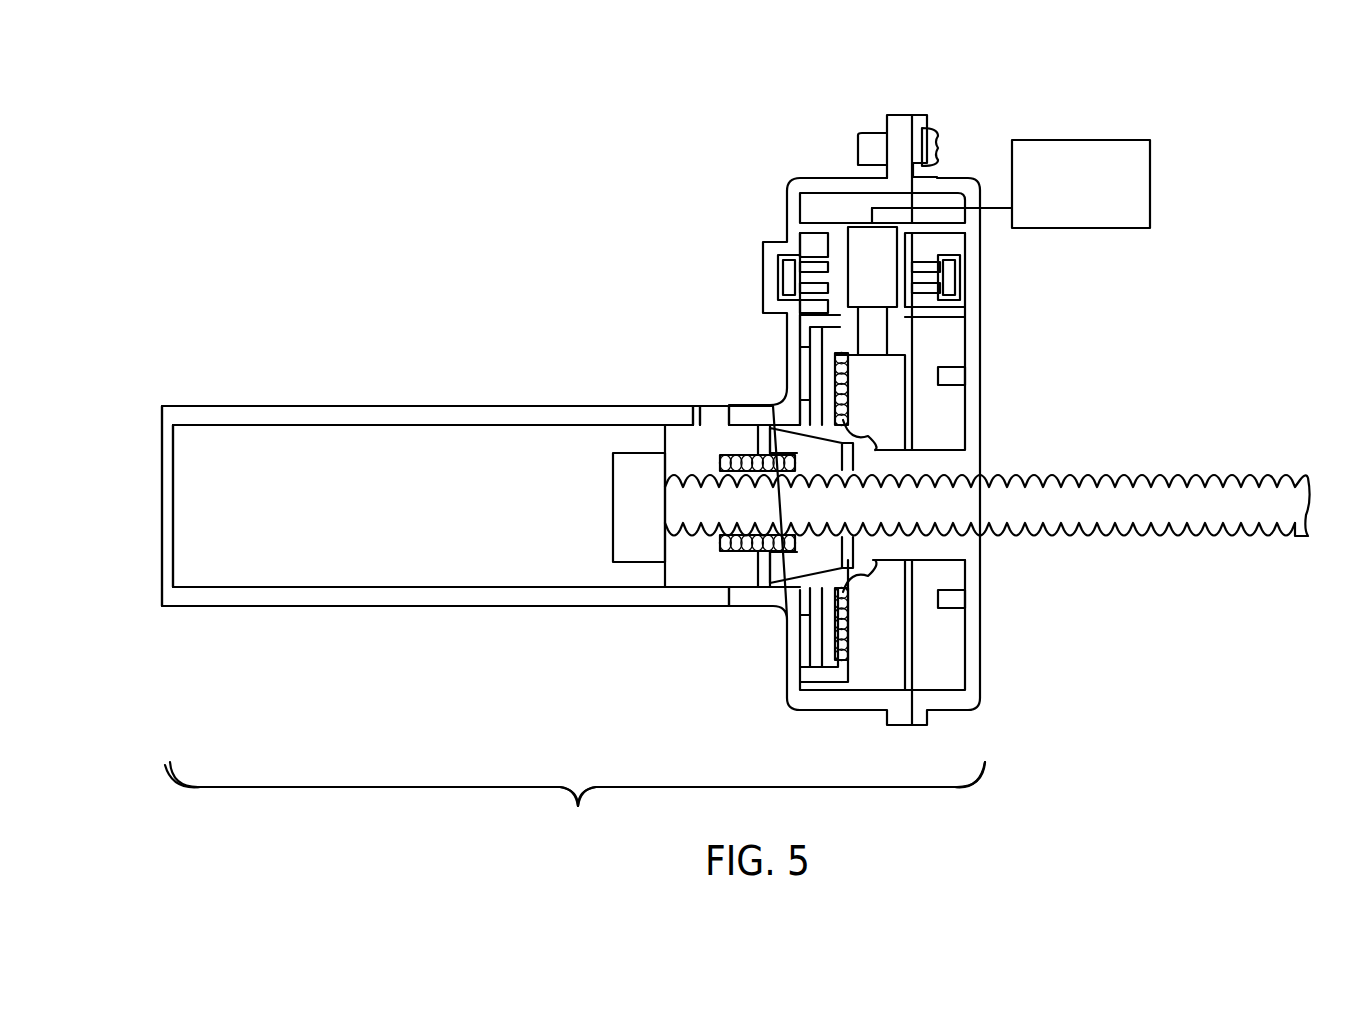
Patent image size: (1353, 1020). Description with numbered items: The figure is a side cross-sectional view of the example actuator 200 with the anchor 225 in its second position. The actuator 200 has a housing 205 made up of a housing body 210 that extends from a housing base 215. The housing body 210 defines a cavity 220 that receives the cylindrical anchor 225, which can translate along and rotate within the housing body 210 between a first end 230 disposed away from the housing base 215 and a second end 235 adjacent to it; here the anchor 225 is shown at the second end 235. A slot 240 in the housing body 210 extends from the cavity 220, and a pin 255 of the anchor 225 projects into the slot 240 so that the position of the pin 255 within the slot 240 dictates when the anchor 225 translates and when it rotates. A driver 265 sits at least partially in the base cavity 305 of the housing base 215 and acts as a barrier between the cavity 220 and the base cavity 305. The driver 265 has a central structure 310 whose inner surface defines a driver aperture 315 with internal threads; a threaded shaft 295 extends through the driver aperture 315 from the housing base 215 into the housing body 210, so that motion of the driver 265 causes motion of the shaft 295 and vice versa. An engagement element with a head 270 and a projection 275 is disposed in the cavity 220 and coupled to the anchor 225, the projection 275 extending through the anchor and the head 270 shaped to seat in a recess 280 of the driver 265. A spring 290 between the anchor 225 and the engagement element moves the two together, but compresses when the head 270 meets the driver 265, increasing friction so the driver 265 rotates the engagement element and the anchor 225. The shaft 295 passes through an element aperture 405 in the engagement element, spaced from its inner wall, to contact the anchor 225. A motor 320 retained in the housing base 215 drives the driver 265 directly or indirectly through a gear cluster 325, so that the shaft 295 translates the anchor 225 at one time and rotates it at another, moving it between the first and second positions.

The actuator 200 is at (340, 158).
The housing 205 is at (577, 805).
The housing body 210 is at (530, 410).
The housing base 215 is at (826, 182).
The cavity 220 is at (443, 430).
The anchor 225 is at (698, 575).
The first end 230 is at (160, 418).
The second end 235 is at (777, 400).
The slot 240 is at (695, 405).
The pin 255 is at (717, 405).
The driver 265 is at (937, 560).
The head 270 is at (812, 572).
The projection 275 is at (620, 432).
The recess 280 is at (850, 465).
The spring 290 is at (767, 567).
The shaft 295 is at (1128, 495).
The base cavity 305 is at (940, 643).
The central structure 310 is at (950, 458).
The driver aperture 315 is at (965, 536).
The motor 320 is at (1080, 140).
The gear cluster 325 is at (985, 285).
The element aperture 405 is at (848, 572).